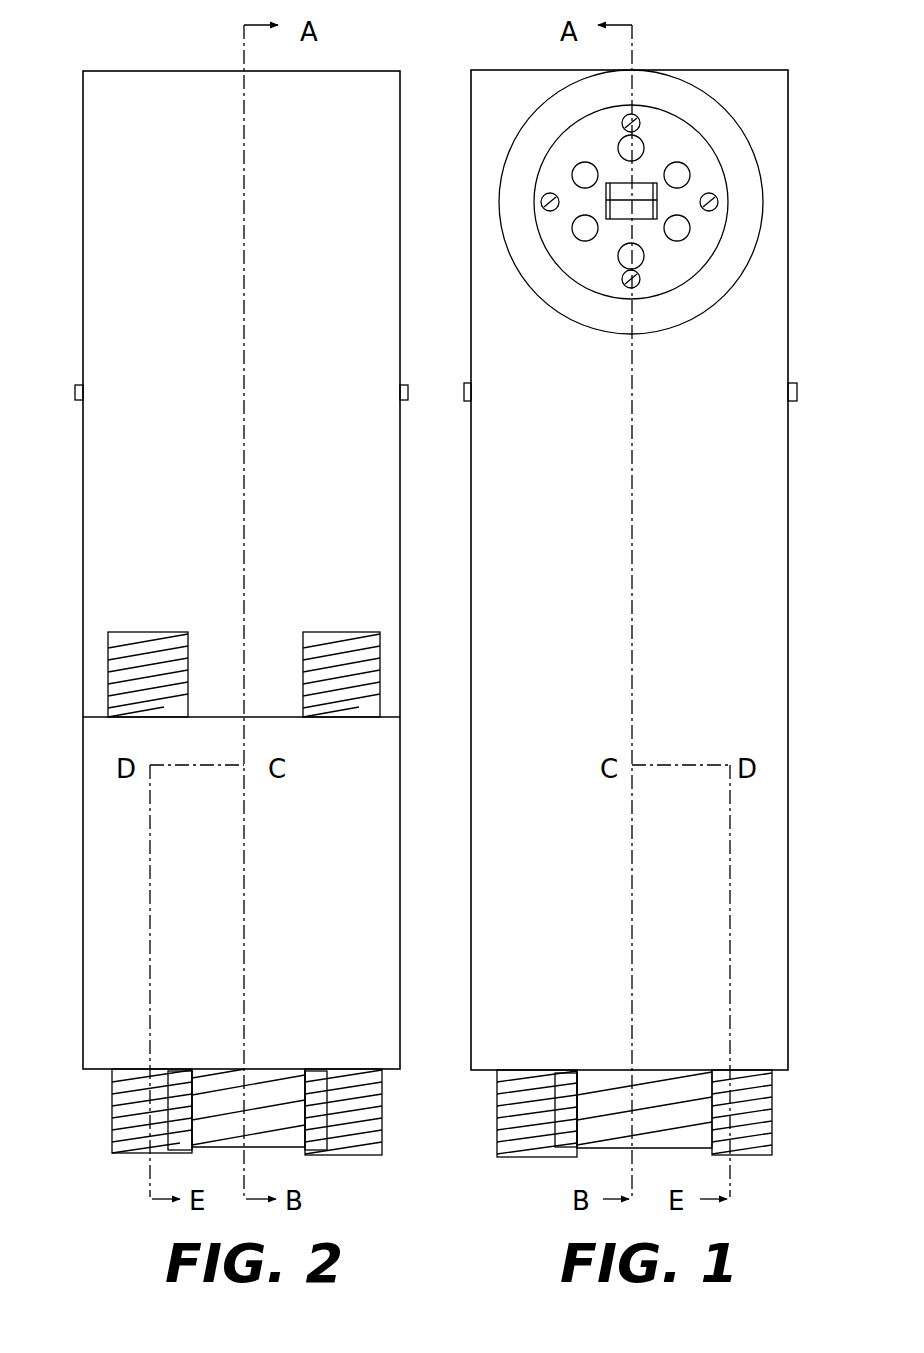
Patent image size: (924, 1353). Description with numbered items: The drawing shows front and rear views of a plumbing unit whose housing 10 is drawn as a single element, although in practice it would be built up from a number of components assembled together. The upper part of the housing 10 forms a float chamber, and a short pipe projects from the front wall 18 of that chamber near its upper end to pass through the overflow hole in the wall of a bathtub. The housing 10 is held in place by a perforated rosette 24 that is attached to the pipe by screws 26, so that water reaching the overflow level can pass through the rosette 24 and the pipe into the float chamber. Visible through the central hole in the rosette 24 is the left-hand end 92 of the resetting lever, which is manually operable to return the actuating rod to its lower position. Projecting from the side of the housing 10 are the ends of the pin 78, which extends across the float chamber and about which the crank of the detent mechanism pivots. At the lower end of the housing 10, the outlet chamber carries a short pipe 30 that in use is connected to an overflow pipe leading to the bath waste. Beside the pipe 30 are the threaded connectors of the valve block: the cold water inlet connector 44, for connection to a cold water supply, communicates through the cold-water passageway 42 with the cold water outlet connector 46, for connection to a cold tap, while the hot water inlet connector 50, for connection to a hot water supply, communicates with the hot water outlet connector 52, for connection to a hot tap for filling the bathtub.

In FIG. 1, the housing 10 is at (683, 570).
In FIG. 1, the front wall 18 is at (762, 592).
In FIG. 1, the perforated rosette 24 is at (702, 153).
In FIG. 1, the screws 26 is at (722, 200).
In FIG. 2, the short pipe 30 is at (298, 1147).
In FIG. 1, the short pipe 30 is at (678, 1147).
In FIG. 1, the cold-water passageway 42 is at (765, 1099).
In FIG. 2, the cold water inlet connector 44 is at (115, 1112).
In FIG. 2, the cold water outlet connector 46 is at (113, 672).
In FIG. 2, the hot water inlet connector 50 is at (380, 1107).
In FIG. 1, the hot water inlet connector 50 is at (500, 1137).
In FIG. 2, the hot water outlet connector 52 is at (383, 662).
In FIG. 1, the pin 78 is at (797, 385).
In FIG. 1, the left-hand end of resetting lever 92 is at (627, 193).